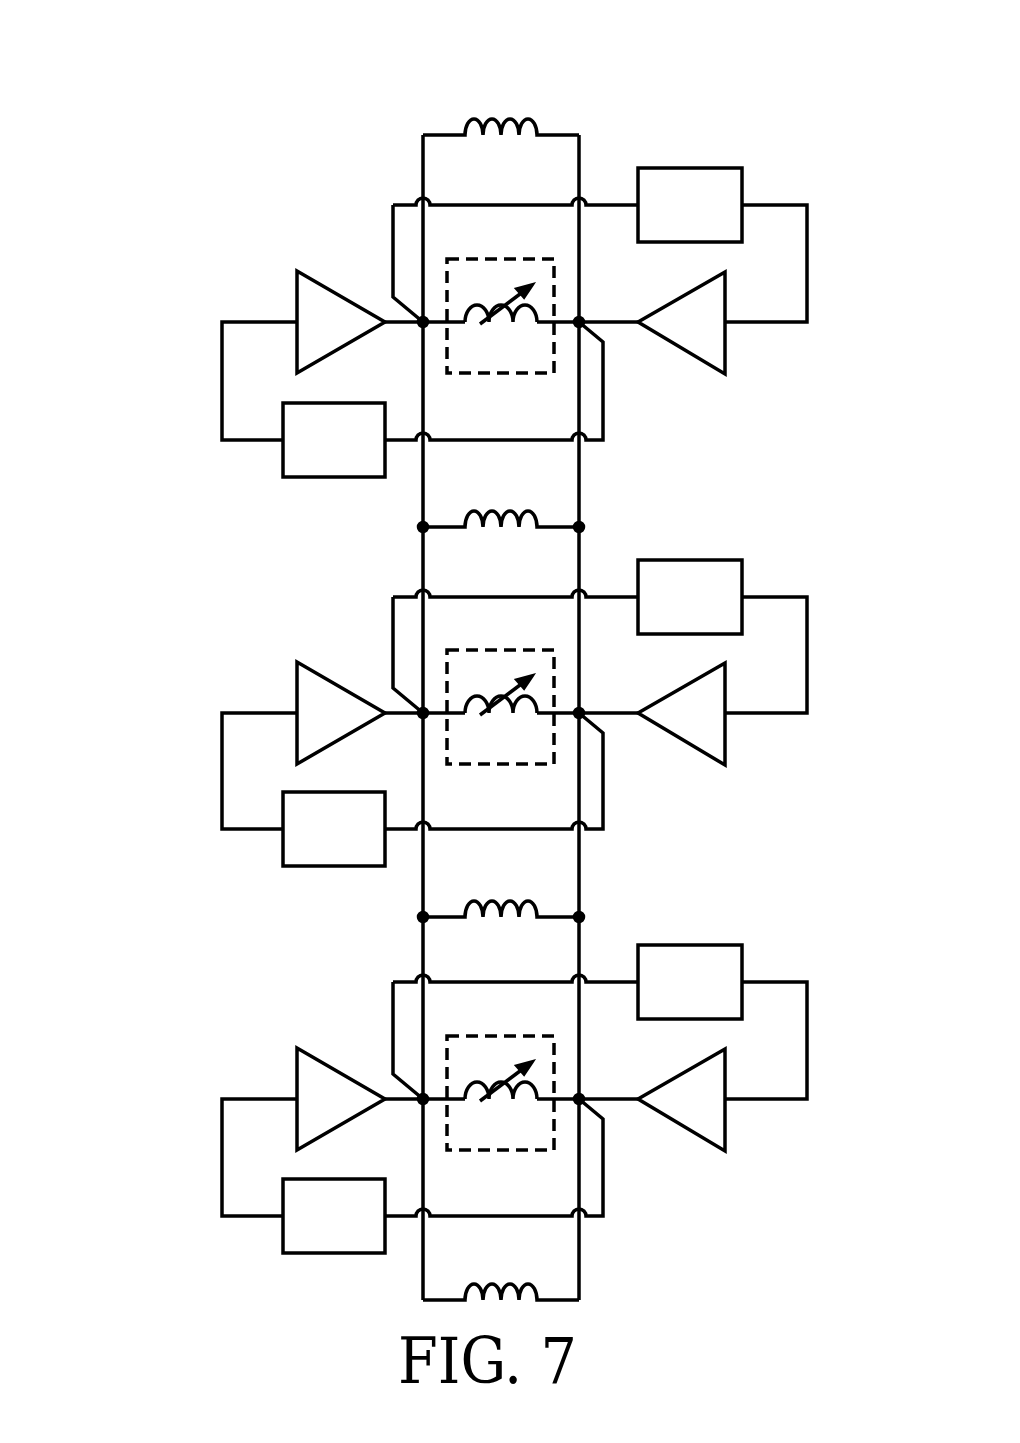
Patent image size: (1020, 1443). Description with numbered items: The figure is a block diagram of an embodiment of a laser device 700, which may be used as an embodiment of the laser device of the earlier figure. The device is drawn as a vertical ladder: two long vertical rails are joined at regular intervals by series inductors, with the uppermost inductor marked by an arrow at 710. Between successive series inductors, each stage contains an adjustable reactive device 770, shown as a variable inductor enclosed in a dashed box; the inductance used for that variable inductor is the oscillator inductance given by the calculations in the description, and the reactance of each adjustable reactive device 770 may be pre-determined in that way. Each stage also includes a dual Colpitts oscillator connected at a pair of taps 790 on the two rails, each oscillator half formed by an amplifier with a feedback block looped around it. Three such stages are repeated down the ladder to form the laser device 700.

The laser device 700 is at (87, 675).
The inductor L1 / input node 710 is at (505, 98).
The adjustable reactive device 770 is at (500, 374).
The taps 790 is at (420, 332).